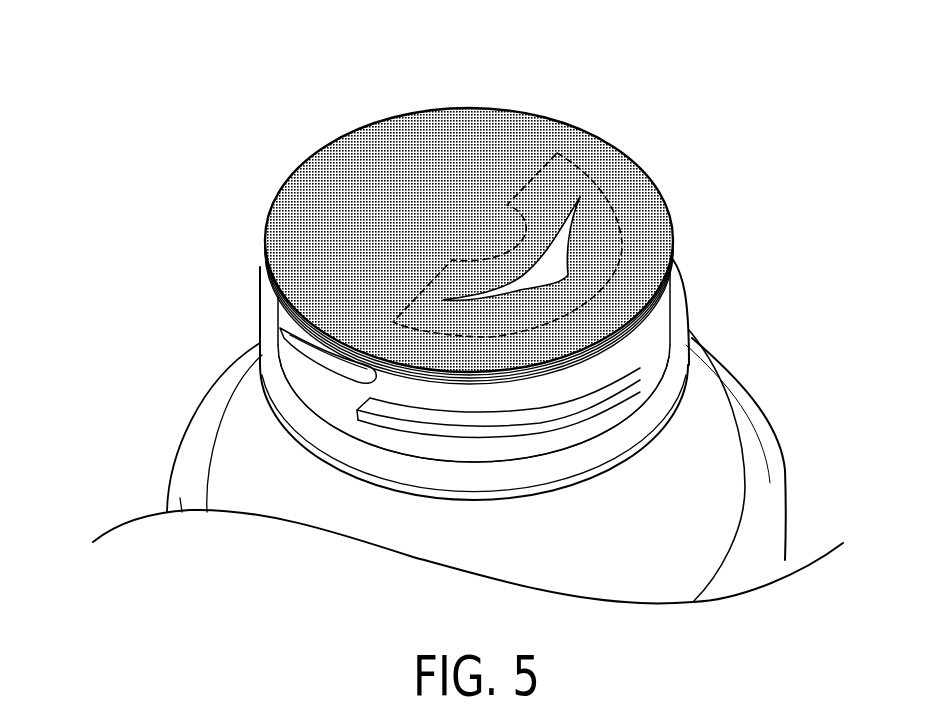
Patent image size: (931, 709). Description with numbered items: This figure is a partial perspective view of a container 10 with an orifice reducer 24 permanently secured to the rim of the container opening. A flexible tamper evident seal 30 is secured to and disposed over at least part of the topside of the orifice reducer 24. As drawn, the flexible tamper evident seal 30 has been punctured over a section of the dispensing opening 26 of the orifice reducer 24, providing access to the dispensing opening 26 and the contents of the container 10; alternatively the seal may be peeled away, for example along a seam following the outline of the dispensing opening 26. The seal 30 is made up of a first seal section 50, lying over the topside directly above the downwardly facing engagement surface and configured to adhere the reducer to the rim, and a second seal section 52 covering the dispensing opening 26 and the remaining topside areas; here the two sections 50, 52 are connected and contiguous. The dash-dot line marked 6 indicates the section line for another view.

The container 10 is at (138, 477).
The orifice reducer 24 is at (606, 325).
The dispensing opening 26 is at (560, 263).
The flexible tamper evident seal 30 is at (340, 240).
The first seal section 50 is at (285, 277).
The second seal section 52 is at (602, 213).
The section line 6- 6 is at (287, 178).